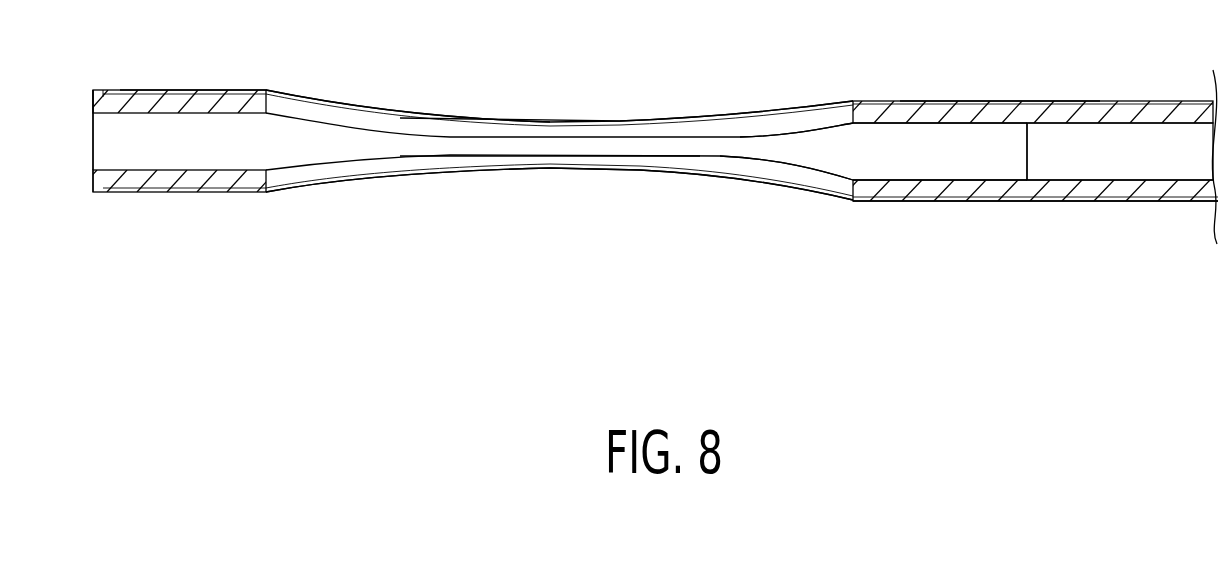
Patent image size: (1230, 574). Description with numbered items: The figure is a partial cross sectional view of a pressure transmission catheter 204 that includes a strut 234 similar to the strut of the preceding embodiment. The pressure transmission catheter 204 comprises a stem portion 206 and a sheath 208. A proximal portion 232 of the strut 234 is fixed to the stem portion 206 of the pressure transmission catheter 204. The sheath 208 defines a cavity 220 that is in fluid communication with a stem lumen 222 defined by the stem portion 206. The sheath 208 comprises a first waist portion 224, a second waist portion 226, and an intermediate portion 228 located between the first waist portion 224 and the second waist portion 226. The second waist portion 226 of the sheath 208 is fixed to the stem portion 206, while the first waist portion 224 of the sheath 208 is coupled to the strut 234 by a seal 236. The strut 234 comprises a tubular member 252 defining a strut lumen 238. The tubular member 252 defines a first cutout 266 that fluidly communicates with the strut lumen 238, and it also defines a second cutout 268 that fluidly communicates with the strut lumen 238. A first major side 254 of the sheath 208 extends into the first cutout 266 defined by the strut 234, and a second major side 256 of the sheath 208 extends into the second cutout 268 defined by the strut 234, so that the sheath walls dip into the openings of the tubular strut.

The pressure transmission catheter 204 is at (908, 308).
The stem portion 206 is at (1127, 202).
The sheath 208 is at (325, 192).
The cavity 220 is at (300, 117).
The stem lumen 222 is at (1095, 154).
The first waist portion 224 is at (165, 194).
The second waist portion 226 is at (908, 102).
The intermediate portion 228 is at (540, 203).
The proximal portion 232 is at (940, 184).
The strut 234 is at (820, 128).
The seal 236 is at (97, 100).
The strut lumen 238 is at (174, 119).
The tubular member 252 is at (98, 142).
The first major side 254 is at (485, 122).
The second major side 256 is at (480, 170).
The first cutout 266 is at (760, 127).
The second cutout 268 is at (760, 167).